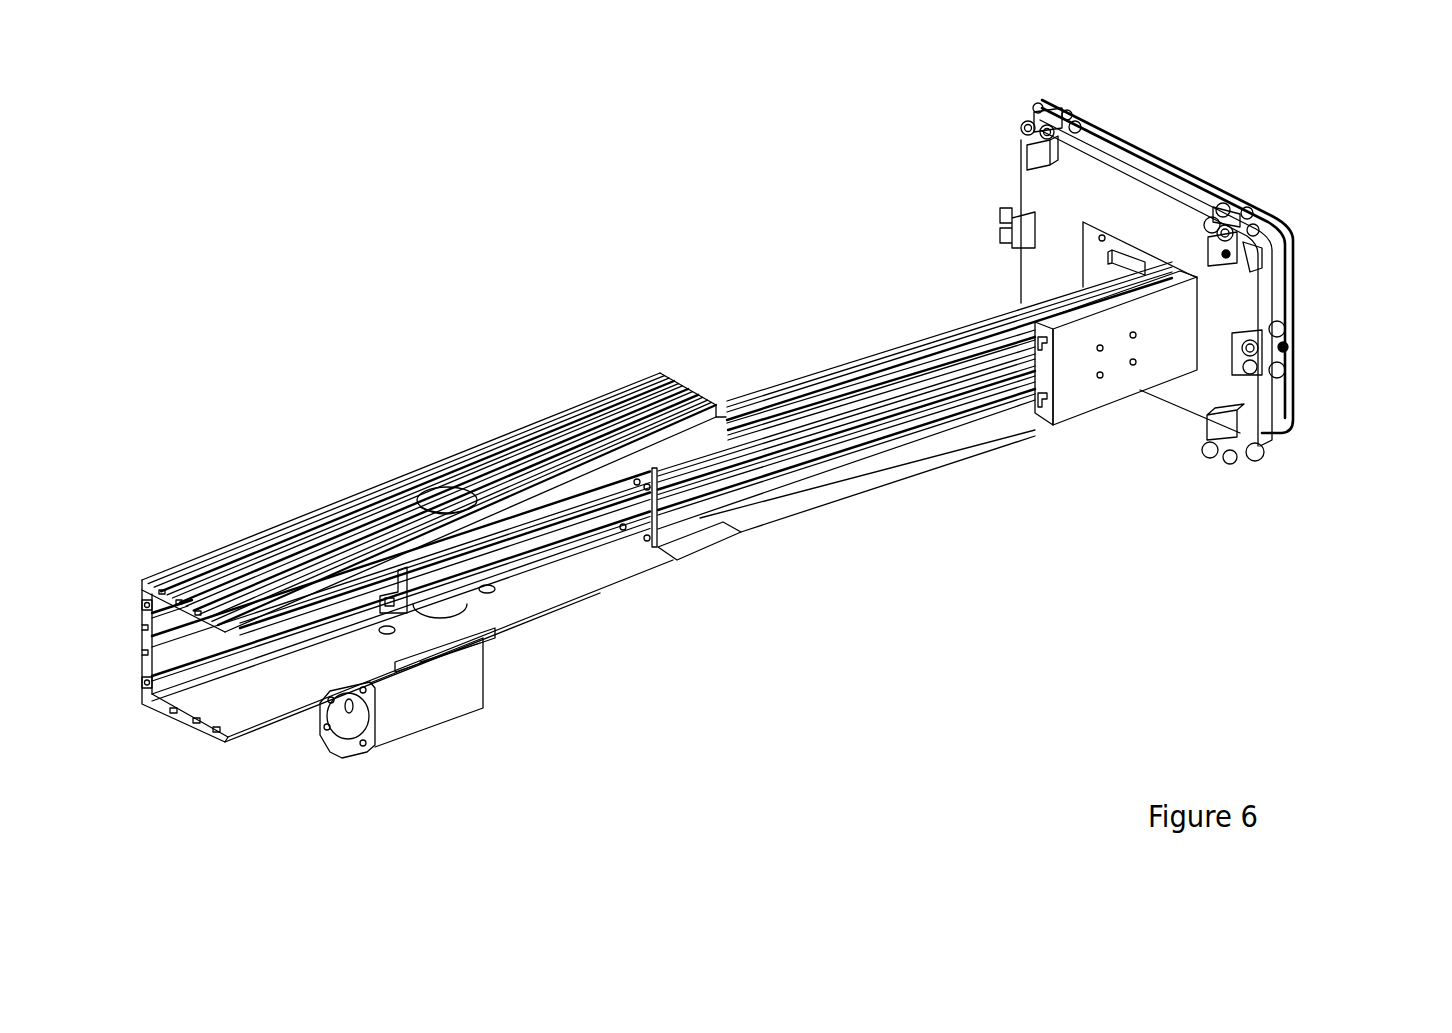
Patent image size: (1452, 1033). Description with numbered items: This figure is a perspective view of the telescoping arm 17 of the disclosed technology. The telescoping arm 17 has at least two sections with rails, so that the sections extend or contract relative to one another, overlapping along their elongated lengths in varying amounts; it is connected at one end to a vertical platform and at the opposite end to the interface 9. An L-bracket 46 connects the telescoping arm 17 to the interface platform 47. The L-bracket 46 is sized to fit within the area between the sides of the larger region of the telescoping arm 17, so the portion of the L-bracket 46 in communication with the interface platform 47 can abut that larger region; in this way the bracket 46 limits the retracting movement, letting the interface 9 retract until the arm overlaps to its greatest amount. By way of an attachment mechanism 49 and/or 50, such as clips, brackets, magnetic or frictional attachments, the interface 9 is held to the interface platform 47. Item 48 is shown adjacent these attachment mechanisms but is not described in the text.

The interface 9 is at (1147, 162).
The telescoping arm 17 is at (520, 448).
The L-bracket 46 is at (1093, 394).
The interface platform 47 is at (1217, 293).
The clamp block 48 is at (1226, 254).
The attachment mechanism 49 is at (1244, 235).
The attachment mechanism 50 is at (1258, 221).